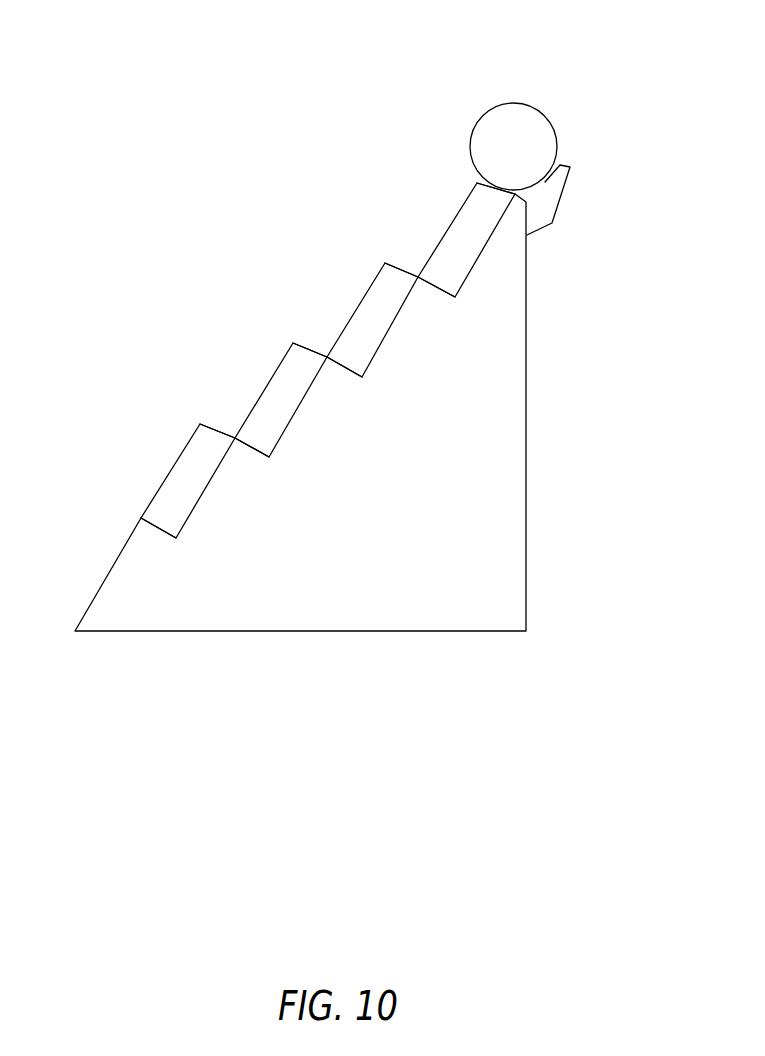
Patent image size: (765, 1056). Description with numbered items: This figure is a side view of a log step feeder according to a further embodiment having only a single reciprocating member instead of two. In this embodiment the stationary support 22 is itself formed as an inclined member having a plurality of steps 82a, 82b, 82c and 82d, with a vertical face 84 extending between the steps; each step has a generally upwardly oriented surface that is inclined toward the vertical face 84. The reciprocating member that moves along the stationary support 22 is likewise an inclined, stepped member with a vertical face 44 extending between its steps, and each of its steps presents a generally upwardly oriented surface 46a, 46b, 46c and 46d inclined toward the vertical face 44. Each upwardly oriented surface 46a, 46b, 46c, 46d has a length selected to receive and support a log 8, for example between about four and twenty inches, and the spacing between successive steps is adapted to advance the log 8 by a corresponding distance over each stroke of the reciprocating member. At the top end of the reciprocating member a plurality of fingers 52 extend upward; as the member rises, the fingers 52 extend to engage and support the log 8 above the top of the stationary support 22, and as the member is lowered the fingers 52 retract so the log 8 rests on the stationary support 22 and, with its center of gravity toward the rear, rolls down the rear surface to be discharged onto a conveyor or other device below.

The log 8 is at (537, 106).
The stationary support 22 is at (482, 408).
The vertical face 44 is at (440, 189).
The upwardly oriented surface 46a is at (495, 170).
The upwardly oriented surface 46b is at (402, 255).
The upwardly oriented surface 46c is at (310, 335).
The upwardly oriented surface 46d is at (217, 415).
The fingers 52 is at (550, 198).
The step 82a is at (435, 282).
The step 82b is at (347, 367).
The step 82c is at (252, 447).
The step 82d is at (158, 524).
The vertical face 84 is at (475, 232).